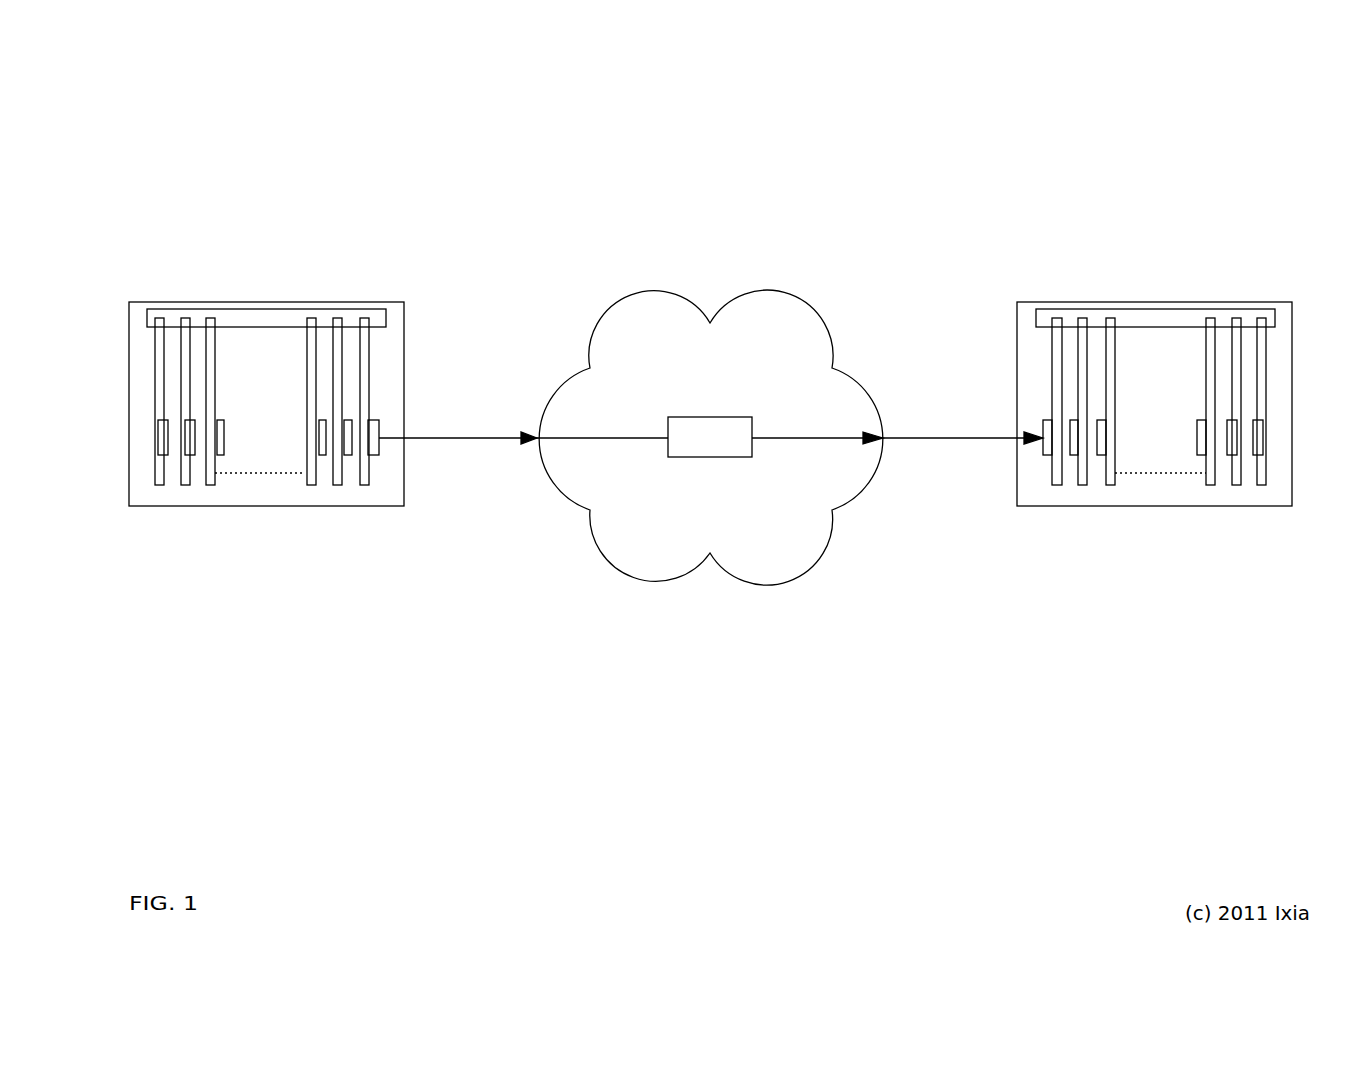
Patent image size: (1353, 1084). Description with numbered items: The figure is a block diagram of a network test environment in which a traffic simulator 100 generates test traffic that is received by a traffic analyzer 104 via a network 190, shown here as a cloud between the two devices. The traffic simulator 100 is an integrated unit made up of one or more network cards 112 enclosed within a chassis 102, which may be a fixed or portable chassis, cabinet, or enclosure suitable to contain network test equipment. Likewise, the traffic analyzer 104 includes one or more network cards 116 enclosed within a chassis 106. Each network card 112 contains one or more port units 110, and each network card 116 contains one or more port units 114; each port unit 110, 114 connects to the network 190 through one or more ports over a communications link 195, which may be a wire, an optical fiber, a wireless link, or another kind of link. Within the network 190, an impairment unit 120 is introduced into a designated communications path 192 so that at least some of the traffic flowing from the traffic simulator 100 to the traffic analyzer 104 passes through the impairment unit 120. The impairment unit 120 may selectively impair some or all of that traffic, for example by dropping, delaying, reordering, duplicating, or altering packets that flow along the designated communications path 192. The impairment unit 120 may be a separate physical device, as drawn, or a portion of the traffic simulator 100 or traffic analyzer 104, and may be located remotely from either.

The traffic simulator 100 is at (253, 172).
The chassis 102 is at (329, 302).
The traffic analyzer 104 is at (1152, 172).
The chassis 106 is at (1094, 302).
The port unit 110 is at (374, 456).
The network card 112 is at (364, 486).
The port unit 114 is at (1047, 456).
The network card 116 is at (1057, 486).
The impairment unit 120 is at (725, 417).
The network 190 is at (711, 389).
The designated communications path 192 is at (806, 438).
The communications link 195 is at (498, 438).